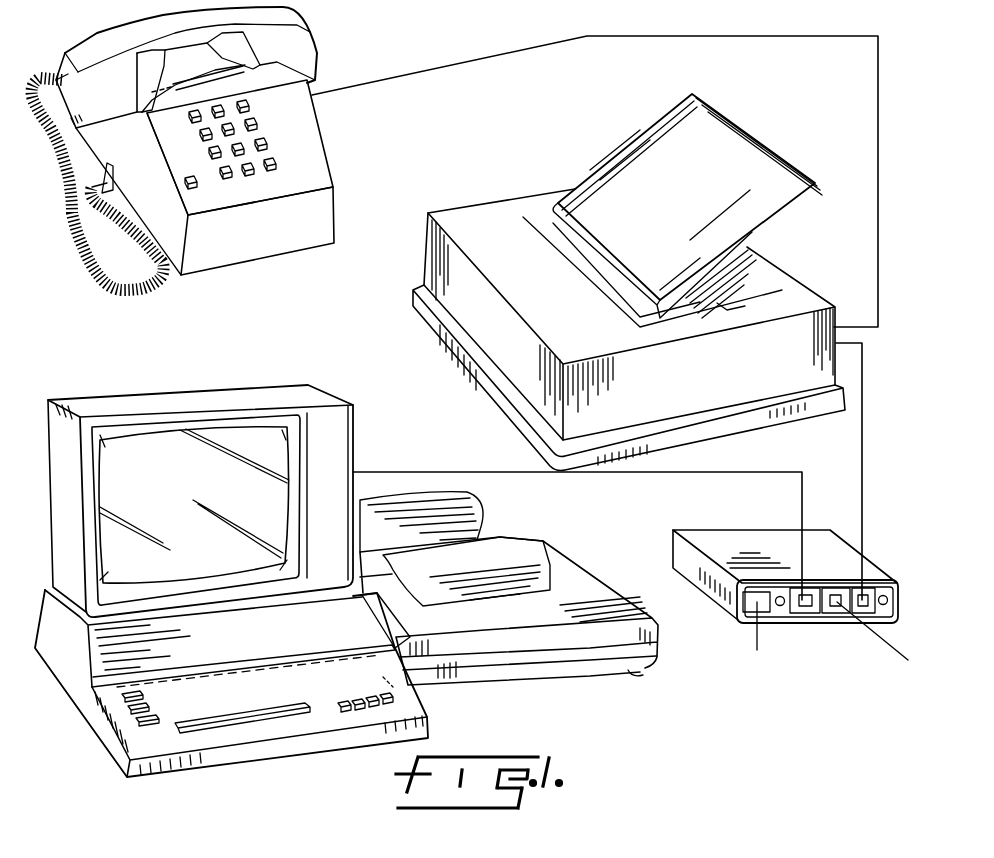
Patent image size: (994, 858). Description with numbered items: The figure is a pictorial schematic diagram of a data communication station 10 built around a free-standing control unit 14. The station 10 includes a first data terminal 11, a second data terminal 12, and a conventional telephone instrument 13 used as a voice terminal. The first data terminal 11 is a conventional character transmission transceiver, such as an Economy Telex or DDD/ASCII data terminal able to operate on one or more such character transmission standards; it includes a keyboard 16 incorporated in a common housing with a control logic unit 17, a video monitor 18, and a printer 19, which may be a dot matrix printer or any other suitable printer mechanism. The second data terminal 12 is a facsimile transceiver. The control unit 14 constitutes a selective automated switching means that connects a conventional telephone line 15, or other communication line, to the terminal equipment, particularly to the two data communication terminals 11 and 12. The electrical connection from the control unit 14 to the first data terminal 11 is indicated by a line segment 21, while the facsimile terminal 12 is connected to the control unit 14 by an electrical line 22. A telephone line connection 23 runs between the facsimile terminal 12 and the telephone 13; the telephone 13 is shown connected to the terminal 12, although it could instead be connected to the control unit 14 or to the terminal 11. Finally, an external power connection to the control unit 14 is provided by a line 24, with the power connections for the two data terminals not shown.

The data communication station 10 is at (390, 226).
The first data terminal 11 is at (273, 378).
The second data terminal 12 is at (485, 343).
The telephone instrument 13 is at (283, 246).
The control unit 14 is at (714, 530).
The telephone line 15 is at (868, 640).
The keyboard 16 is at (283, 716).
The control logic unit 17 is at (100, 722).
The video monitor 18 is at (163, 403).
The printer 19 is at (507, 670).
The line segment 21 is at (463, 447).
The electrical line 22 is at (862, 440).
The telephone line connection 23 is at (695, 12).
The power line 24 is at (757, 638).